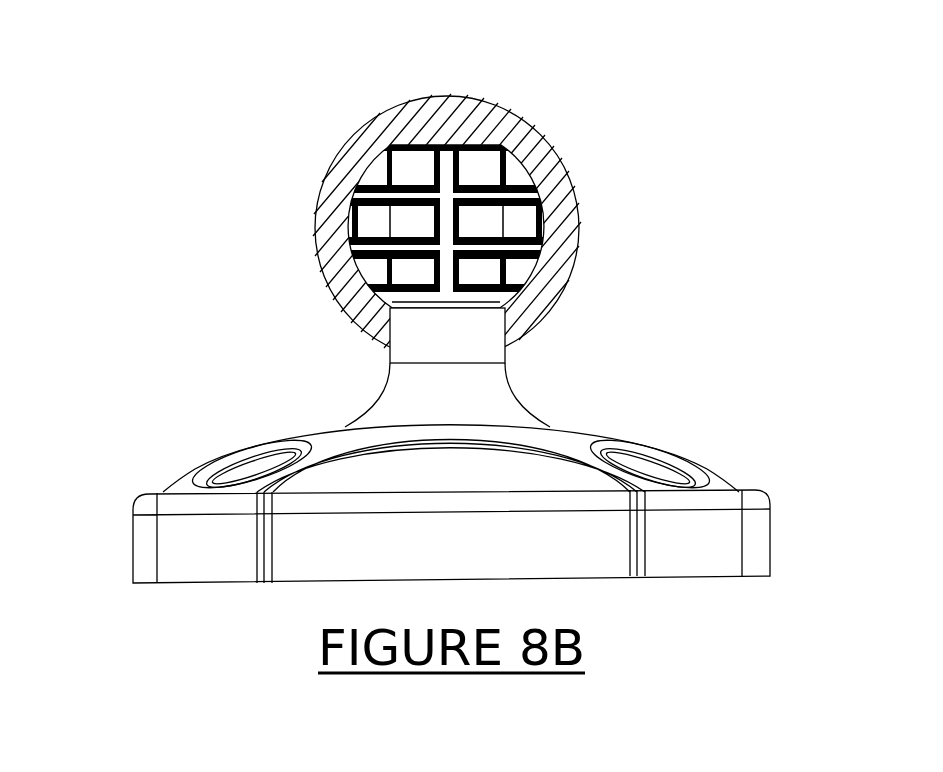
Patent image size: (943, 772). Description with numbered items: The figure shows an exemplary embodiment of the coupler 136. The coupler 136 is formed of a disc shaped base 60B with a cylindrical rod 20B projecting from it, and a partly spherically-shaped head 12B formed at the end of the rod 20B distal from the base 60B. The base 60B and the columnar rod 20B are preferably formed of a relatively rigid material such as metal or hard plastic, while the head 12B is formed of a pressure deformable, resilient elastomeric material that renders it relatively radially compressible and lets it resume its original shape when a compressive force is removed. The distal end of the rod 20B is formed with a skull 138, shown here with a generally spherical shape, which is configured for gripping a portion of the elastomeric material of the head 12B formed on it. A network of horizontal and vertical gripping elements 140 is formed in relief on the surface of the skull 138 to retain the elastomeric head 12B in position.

The part spherical head 12B is at (336, 128).
The coupler 136 is at (583, 122).
The skull 138 is at (564, 218).
The gripping elements 140 is at (342, 188).
The cylindrical rod 20B is at (526, 362).
The disc shaped base 60B is at (194, 449).